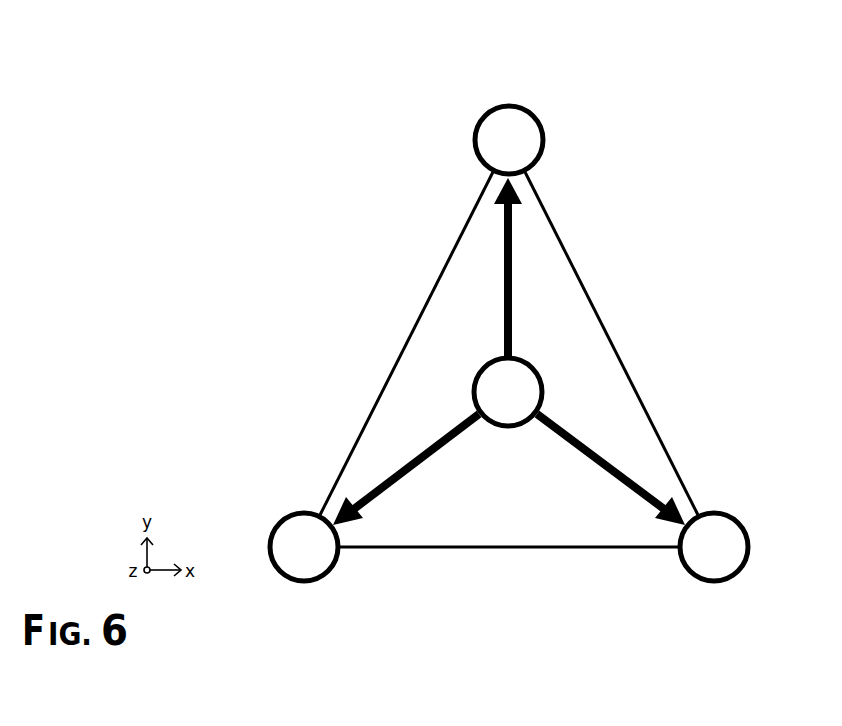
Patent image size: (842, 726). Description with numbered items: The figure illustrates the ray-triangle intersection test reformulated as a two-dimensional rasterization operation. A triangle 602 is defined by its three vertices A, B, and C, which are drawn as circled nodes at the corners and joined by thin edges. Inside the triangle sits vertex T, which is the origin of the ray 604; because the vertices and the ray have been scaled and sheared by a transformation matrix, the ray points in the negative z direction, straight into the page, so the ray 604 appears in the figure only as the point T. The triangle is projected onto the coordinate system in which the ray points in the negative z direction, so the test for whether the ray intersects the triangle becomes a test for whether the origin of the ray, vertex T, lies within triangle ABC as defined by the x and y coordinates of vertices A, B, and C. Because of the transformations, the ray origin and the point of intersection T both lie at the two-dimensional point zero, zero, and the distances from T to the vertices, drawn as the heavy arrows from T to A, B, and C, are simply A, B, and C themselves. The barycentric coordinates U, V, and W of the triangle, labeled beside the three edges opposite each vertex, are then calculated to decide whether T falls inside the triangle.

The triangle 602 is at (300, 153).
The ray 604 is at (493, 362).
The vertex A is at (304, 547).
The vertex B is at (714, 547).
The vertex C is at (509, 140).
The vertex T is at (508, 392).
The barycentric coordinate U is at (611, 343).
The barycentric coordinate V is at (406, 343).
The barycentric coordinate W is at (509, 515).